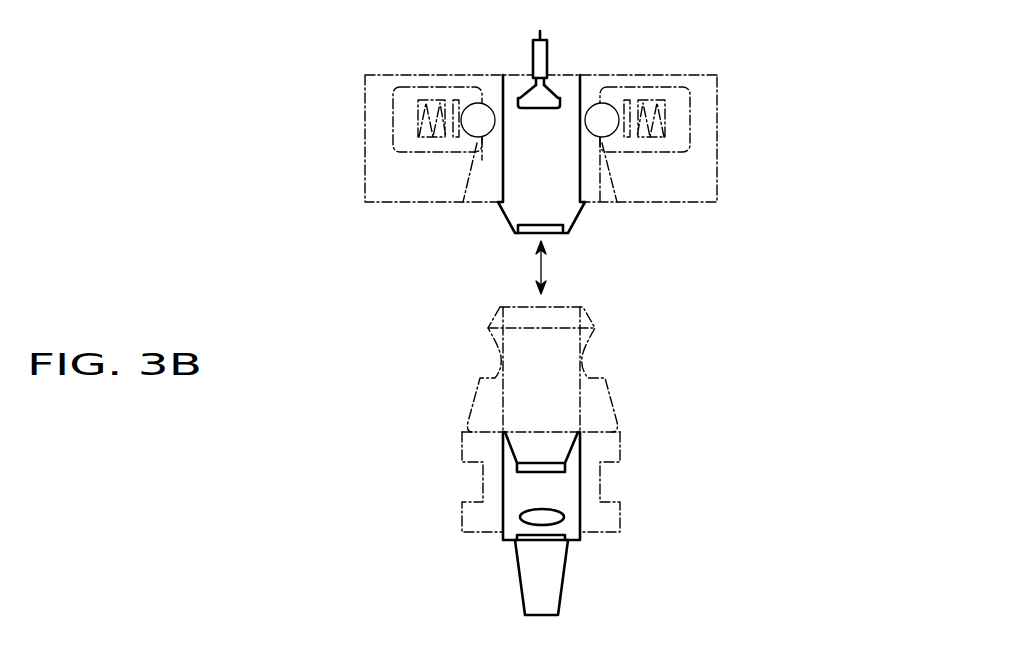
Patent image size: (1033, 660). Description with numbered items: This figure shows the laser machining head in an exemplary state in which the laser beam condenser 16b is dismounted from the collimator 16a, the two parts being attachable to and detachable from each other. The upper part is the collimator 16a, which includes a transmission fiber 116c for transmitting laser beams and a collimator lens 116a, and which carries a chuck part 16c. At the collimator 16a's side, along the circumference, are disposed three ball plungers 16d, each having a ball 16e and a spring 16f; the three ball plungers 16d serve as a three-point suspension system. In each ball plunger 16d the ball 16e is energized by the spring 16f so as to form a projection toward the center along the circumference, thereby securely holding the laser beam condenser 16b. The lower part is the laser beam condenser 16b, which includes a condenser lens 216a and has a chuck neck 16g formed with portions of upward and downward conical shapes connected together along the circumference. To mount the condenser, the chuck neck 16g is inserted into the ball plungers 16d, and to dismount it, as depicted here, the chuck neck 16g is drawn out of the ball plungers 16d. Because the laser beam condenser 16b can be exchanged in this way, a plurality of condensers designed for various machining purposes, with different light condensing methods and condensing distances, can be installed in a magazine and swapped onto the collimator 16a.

The transmission fiber 116c is at (547, 56).
The collimator lens 116a is at (548, 100).
The ball plunger 16d is at (690, 130).
The spring 16f is at (423, 116).
The ball 16e is at (480, 122).
The collimator 16a is at (543, 183).
The chuck part 16c is at (680, 173).
The chuck neck 16g is at (583, 352).
The condenser lens 216a is at (563, 513).
The laser beam condenser 16b is at (568, 522).